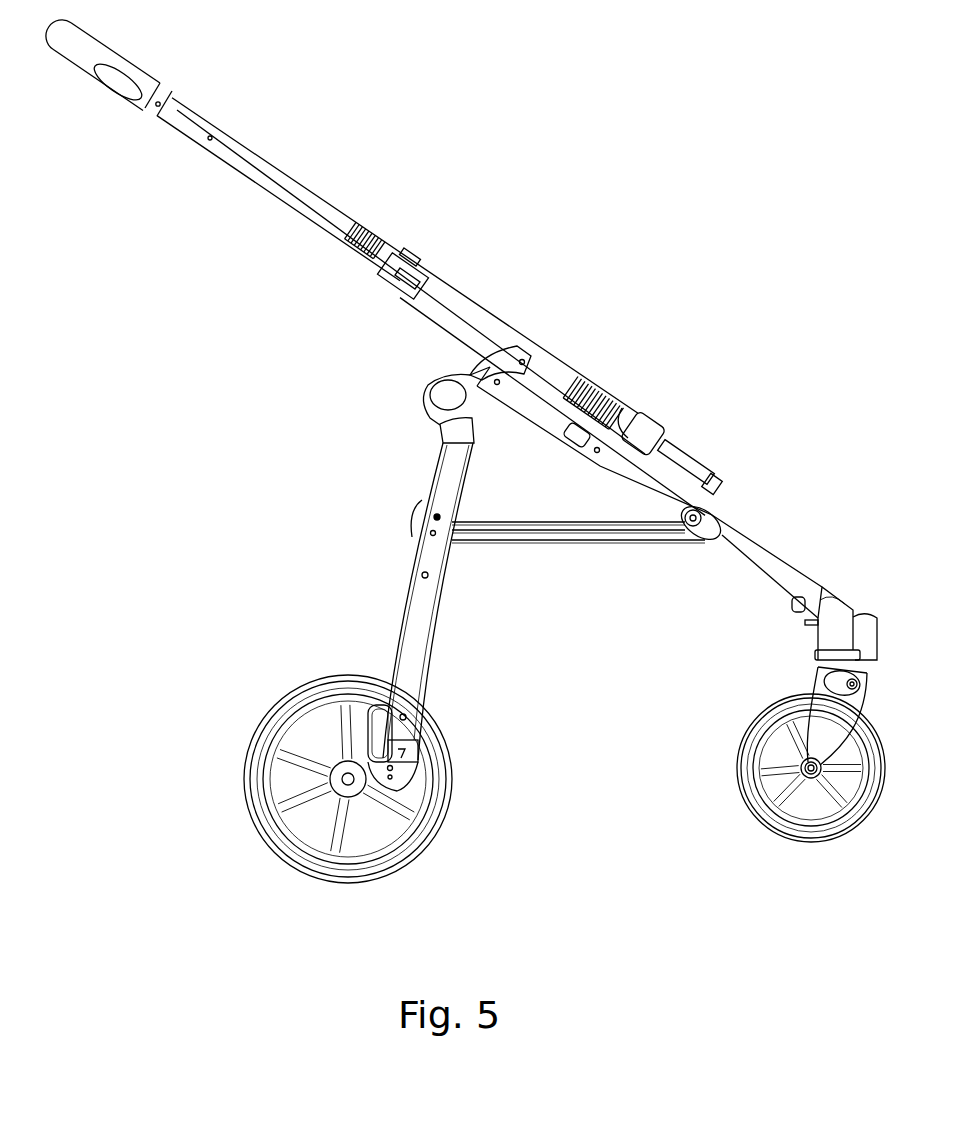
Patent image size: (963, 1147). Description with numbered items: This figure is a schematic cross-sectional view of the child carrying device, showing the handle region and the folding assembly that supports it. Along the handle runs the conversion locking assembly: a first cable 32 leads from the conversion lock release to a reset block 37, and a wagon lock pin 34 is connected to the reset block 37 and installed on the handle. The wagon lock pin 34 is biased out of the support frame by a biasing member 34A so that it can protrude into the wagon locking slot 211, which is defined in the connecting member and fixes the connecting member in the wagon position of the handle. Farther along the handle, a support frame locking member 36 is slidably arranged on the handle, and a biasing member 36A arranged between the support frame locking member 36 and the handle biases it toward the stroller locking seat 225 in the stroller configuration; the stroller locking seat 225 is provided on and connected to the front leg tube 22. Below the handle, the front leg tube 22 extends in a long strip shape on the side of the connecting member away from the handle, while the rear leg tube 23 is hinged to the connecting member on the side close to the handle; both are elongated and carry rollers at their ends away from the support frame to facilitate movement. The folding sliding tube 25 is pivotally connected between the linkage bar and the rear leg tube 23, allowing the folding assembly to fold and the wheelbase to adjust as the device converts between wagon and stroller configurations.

The first cable 32 is at (223, 147).
The reset block 37 is at (352, 253).
The wagon locking pin 34 is at (378, 280).
The biasing member 34A is at (398, 253).
The wagon locking slot 211 is at (520, 365).
The biasing member 36A is at (607, 398).
The support frame locking member 36 is at (657, 433).
The stroller locking seat 225 is at (597, 423).
The front leg tube 22 is at (760, 563).
The folding sliding tube 25 is at (565, 540).
The rear leg tube 23 is at (408, 632).